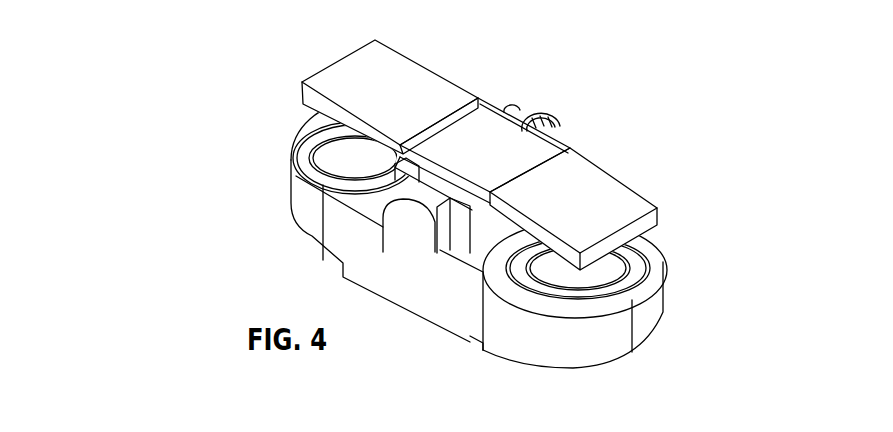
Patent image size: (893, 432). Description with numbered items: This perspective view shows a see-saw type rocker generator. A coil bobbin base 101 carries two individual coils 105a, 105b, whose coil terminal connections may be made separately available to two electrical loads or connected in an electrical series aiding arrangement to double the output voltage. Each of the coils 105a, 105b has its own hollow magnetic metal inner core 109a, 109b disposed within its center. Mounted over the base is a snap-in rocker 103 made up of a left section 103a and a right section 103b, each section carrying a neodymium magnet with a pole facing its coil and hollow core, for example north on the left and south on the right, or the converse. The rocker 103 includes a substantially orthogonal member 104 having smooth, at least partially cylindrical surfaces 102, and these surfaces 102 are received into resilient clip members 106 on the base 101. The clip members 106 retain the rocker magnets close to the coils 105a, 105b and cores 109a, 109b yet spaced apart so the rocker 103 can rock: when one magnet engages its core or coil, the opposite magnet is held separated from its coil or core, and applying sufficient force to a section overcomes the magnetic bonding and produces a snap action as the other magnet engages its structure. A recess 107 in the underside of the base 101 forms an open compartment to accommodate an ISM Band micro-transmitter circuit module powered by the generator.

The coil bobbin base 101 is at (407, 273).
The surfaces 102 is at (450, 195).
The rocker 103 is at (473, 148).
The left section 103a is at (363, 85).
The right section 103b is at (578, 208).
The orthogonal member 104 is at (535, 118).
The coil 105a is at (333, 150).
The coil 105b is at (617, 274).
The resilient clip members 106 is at (512, 115).
The recess 107 is at (453, 337).
The inner core 109a is at (367, 155).
The inner core 109b is at (531, 252).